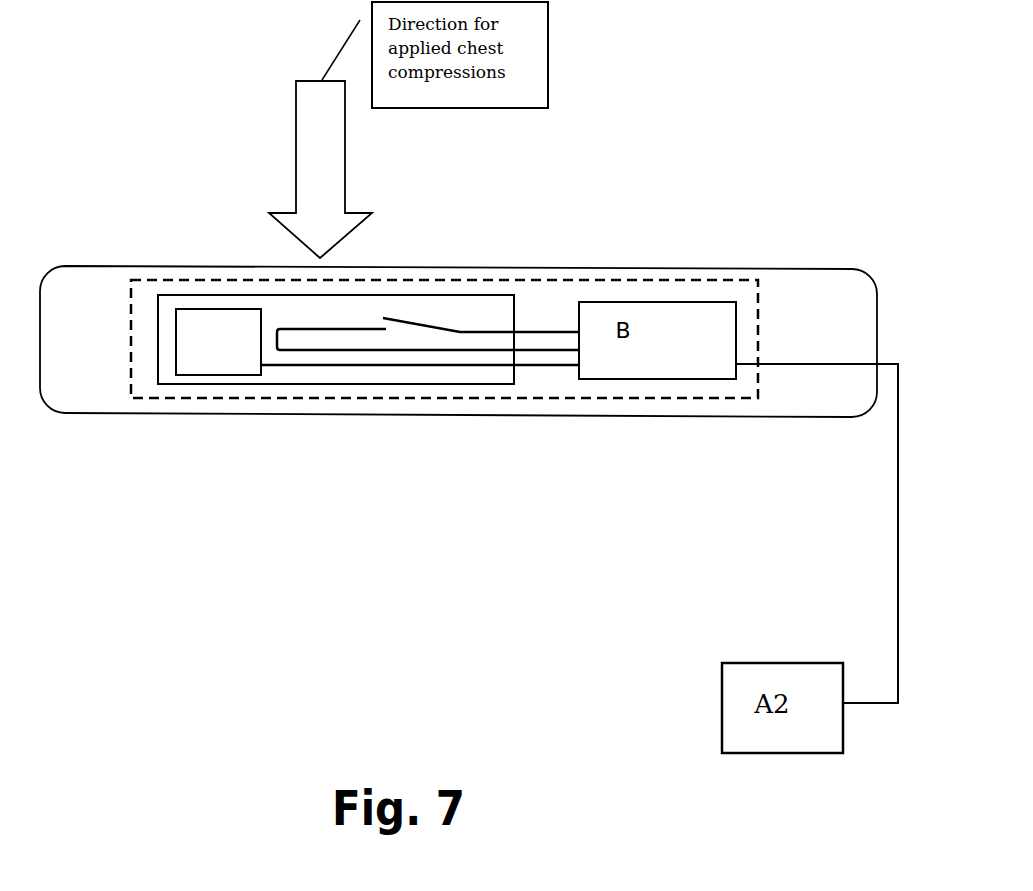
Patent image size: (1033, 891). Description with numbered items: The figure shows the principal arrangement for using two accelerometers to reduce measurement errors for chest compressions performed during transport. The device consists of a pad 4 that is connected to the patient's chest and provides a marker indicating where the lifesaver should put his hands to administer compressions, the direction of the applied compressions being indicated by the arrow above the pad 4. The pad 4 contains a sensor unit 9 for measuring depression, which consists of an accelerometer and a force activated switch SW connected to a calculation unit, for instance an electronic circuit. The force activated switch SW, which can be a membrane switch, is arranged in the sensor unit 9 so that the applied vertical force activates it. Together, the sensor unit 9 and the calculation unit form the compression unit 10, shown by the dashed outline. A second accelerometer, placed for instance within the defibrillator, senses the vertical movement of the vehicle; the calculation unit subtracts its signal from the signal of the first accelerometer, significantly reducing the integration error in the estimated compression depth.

The pad 4 is at (82, 394).
The sensor unit 9 is at (349, 384).
The compression unit 10 is at (537, 398).
The force activated switch SW is at (427, 325).